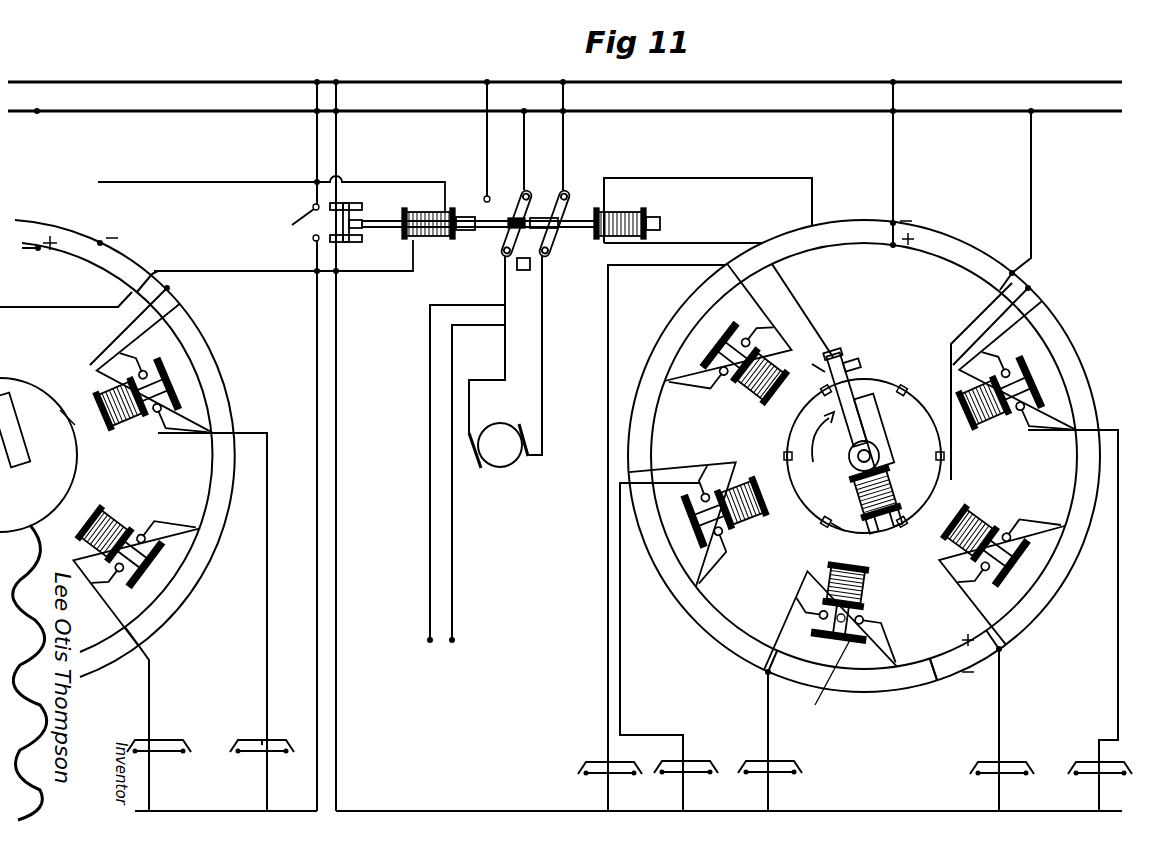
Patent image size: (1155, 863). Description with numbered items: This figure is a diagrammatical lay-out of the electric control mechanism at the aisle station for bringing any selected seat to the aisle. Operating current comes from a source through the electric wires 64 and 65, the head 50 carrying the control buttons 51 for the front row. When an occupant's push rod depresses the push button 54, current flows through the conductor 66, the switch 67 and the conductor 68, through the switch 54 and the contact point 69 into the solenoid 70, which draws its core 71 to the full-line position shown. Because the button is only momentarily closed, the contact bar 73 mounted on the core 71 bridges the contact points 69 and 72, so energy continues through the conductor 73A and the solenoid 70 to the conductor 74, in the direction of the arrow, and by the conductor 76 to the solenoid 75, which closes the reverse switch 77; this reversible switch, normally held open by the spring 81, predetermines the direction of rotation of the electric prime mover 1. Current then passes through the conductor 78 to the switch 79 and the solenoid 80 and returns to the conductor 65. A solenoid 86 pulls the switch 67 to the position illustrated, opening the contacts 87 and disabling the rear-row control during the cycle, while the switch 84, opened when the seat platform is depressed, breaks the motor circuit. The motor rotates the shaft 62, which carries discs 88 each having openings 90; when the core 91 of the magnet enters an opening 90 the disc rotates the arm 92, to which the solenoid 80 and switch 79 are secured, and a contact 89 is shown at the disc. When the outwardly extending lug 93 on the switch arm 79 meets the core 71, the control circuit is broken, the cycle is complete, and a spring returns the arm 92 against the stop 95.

The electric prime mover 1 is at (497, 466).
The control head 50 is at (972, 768).
The control buttons 51 is at (240, 755).
The push button 54 is at (178, 740).
The shaft 62 is at (860, 463).
The electric wire 64 is at (367, 82).
The electric conductor 65 is at (410, 111).
The conductor 66 is at (338, 167).
The switch 67 is at (352, 244).
The conductor 68 is at (338, 562).
The contact point 69 is at (812, 625).
The solenoid 70 is at (830, 577).
The core 71 is at (831, 534).
The contact point 72 is at (840, 667).
The contact bar 73 is at (832, 680).
The conductor 73A is at (849, 247).
The conductor 74 is at (1097, 400).
The solenoid 75 is at (625, 212).
The conductor 76 is at (733, 178).
The reverse switch 77 is at (553, 238).
The conductor 78 is at (720, 243).
The switch 79 is at (840, 347).
The solenoid 80 is at (887, 478).
The spring 81 is at (505, 257).
The switch 84 is at (438, 641).
The solenoid 86 is at (433, 237).
The contacts 87 is at (299, 227).
The disc 88 is at (800, 478).
The rotor contact 89 is at (43, 417).
The openings 90 is at (903, 395).
The core 91 is at (878, 520).
The arm 92 is at (855, 428).
The lug 93 is at (867, 358).
The stop 95 is at (830, 380).